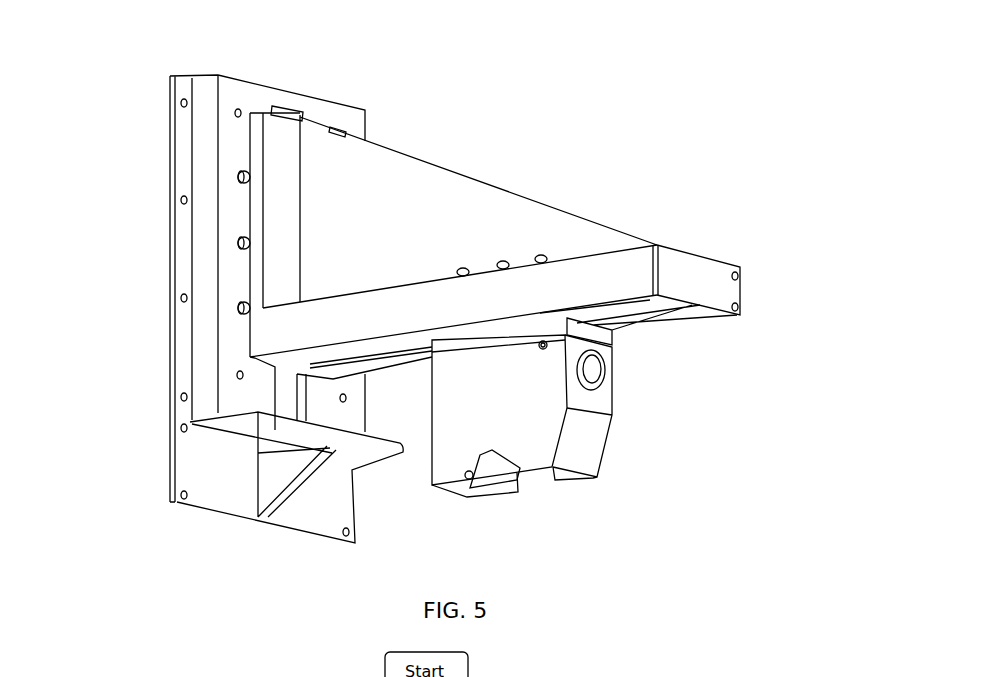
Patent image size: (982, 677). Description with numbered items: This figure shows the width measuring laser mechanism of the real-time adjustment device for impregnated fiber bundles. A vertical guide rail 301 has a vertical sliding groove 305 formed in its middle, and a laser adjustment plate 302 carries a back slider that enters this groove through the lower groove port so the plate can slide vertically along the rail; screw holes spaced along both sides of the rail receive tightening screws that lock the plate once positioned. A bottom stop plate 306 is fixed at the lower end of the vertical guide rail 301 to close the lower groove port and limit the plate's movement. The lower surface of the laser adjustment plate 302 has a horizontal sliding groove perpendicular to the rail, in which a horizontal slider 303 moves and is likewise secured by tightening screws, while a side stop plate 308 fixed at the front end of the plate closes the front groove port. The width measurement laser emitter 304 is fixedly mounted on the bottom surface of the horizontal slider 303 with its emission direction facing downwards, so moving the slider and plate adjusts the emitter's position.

The vertical guide rail 301 is at (177, 182).
The laser adjustment plate 302 is at (297, 336).
The horizontal slider 303 is at (607, 343).
The width measurement laser emitter 304 is at (607, 457).
The vertical sliding groove 305 is at (290, 110).
The bottom stop plate 306 is at (200, 428).
The side stop plate 308 is at (737, 290).